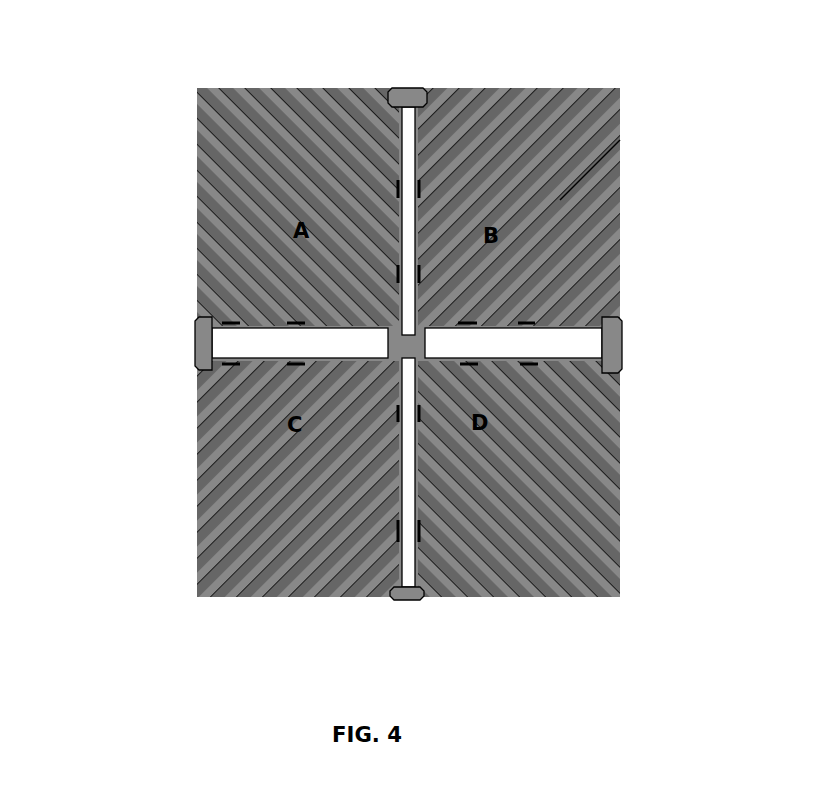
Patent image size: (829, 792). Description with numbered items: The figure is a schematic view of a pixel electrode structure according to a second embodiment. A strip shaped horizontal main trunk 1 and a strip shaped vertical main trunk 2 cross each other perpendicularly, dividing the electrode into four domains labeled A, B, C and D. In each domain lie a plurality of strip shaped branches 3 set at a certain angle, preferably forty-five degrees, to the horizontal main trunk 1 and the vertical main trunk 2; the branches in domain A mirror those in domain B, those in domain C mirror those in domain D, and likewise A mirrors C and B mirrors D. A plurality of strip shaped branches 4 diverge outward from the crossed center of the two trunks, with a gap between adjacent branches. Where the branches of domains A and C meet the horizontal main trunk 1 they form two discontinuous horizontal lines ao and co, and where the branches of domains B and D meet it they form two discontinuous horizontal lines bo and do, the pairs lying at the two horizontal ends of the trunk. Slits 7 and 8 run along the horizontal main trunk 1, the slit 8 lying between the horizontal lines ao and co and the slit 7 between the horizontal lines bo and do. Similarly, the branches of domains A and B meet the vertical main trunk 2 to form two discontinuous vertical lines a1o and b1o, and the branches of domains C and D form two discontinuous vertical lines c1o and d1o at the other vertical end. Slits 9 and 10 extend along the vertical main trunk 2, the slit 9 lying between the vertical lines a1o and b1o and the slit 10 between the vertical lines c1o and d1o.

The horizontal main trunk 1 is at (610, 357).
The vertical main trunk 2 is at (403, 93).
The strip shaped branches 3 is at (575, 135).
The strip shaped branches 4 is at (600, 160).
The slit 7 is at (603, 328).
The slit 8 is at (225, 347).
The slit 9 is at (417, 110).
The slit 10 is at (410, 580).
The horizontal line ao is at (227, 322).
The horizontal line bo is at (600, 253).
The horizontal line co is at (233, 367).
The horizontal line do is at (530, 363).
The vertical line a1o is at (398, 185).
The vertical line b1o is at (420, 185).
The vertical line c1o is at (397, 540).
The vertical line d1o is at (425, 540).